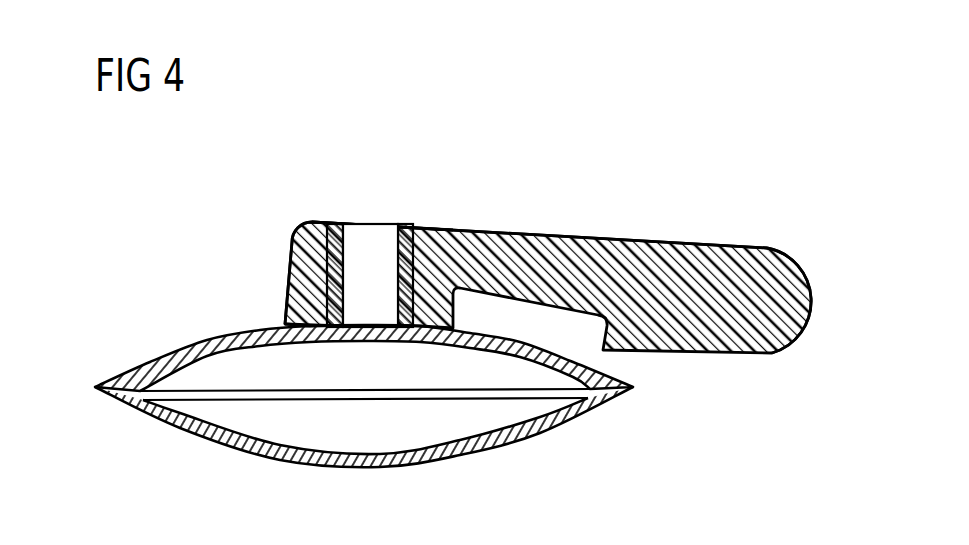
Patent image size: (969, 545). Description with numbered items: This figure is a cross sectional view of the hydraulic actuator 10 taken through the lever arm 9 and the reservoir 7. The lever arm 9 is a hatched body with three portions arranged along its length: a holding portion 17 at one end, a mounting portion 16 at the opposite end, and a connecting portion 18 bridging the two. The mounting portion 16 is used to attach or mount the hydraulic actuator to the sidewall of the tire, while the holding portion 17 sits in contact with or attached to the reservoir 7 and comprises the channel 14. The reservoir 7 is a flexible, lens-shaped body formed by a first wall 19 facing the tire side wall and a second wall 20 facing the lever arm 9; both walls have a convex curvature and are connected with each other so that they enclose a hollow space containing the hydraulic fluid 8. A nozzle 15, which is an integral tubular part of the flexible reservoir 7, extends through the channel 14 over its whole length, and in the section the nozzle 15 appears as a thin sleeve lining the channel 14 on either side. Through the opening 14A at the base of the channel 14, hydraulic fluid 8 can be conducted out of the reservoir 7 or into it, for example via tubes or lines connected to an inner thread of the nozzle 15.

The reservoir 7 is at (530, 428).
The hydraulic fluid 8 is at (462, 425).
The lever arm 9 is at (541, 259).
The closure device 10 is at (201, 188).
The channel 14 is at (373, 237).
The opening 14A is at (283, 317).
The nozzle 15 is at (334, 223).
The mounting portion 16 is at (806, 304).
The holding portion 17 is at (305, 277).
The connecting portion 18 is at (489, 232).
The first wall 19 is at (364, 460).
The second wall 20 is at (207, 340).